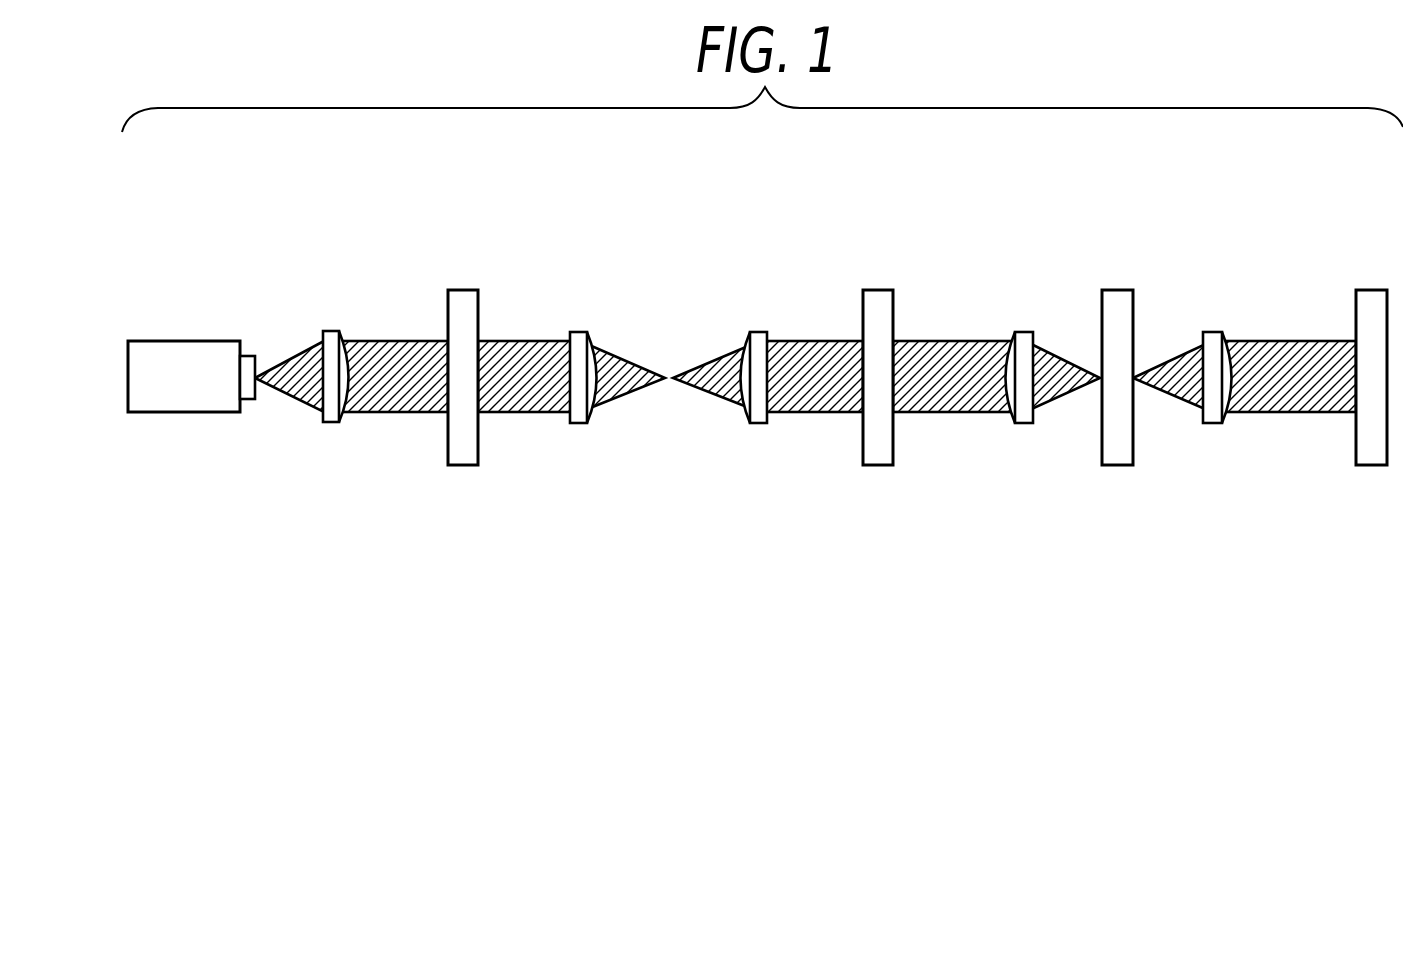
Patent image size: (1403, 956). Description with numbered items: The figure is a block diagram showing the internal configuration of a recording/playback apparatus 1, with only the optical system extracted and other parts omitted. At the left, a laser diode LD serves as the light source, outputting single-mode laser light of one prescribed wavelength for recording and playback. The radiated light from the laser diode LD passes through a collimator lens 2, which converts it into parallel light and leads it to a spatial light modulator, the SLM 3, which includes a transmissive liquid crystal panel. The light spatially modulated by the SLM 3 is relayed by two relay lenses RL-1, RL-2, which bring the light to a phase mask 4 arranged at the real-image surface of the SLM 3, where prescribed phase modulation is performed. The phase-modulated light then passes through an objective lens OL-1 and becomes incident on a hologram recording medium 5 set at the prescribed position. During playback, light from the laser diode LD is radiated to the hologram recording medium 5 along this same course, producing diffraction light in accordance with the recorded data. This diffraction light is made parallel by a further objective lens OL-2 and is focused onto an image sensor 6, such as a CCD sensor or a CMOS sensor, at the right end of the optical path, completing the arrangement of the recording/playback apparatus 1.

The recording/playback apparatus 1 is at (1268, 258).
The laser diode LD is at (186, 413).
The collimator lens 2 is at (330, 424).
The SLM (spatial light modulator) 3 is at (462, 289).
The relay lens RL-1 is at (576, 331).
The relay lens RL-2 is at (757, 424).
The phase mask 4 is at (878, 466).
The objective lens OL-1 is at (1027, 425).
The hologram recording medium 5 is at (1116, 289).
The objective lens OL-2 is at (1213, 424).
The image sensor 6 is at (1372, 466).